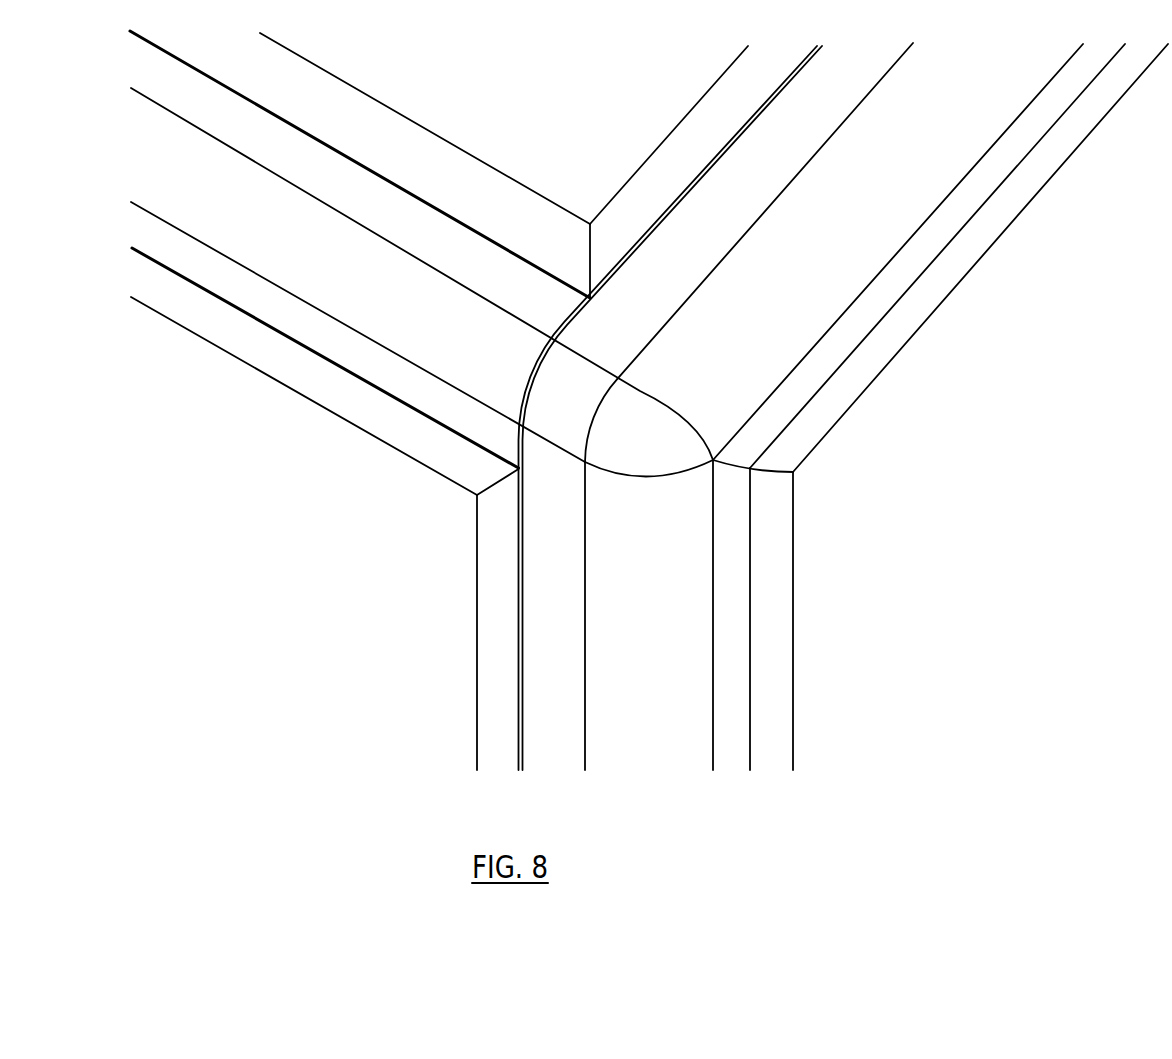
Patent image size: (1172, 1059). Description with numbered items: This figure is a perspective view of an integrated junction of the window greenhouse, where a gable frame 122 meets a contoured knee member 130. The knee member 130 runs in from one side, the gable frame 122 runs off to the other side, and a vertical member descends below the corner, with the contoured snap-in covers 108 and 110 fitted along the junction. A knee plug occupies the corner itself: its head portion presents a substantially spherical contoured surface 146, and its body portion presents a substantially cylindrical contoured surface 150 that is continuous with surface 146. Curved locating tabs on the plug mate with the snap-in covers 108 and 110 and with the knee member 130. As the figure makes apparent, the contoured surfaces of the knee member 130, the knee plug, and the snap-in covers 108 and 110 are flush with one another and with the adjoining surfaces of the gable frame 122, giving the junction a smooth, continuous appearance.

The snap-in cover 108 is at (825, 259).
The snap-in cover 110 is at (667, 625).
The gable frame 122 is at (857, 638).
The knee member 130 is at (348, 312).
The contoured surface 146 is at (663, 438).
The contoured surface 150 is at (565, 383).